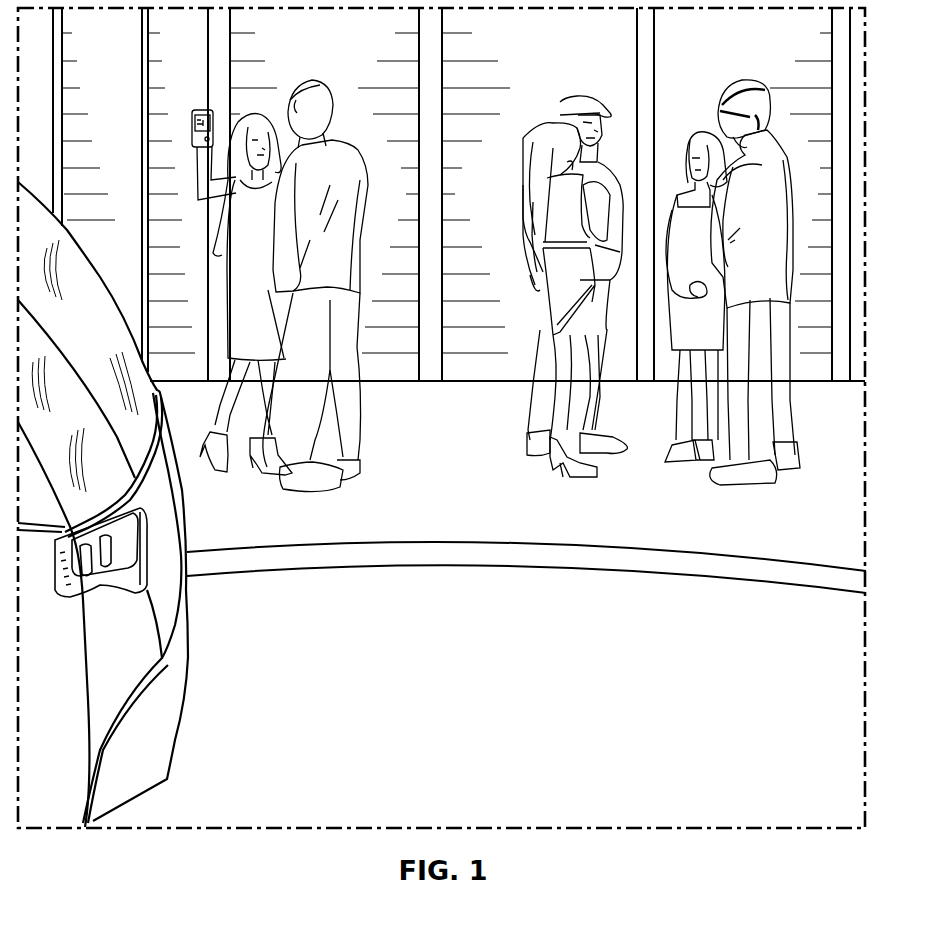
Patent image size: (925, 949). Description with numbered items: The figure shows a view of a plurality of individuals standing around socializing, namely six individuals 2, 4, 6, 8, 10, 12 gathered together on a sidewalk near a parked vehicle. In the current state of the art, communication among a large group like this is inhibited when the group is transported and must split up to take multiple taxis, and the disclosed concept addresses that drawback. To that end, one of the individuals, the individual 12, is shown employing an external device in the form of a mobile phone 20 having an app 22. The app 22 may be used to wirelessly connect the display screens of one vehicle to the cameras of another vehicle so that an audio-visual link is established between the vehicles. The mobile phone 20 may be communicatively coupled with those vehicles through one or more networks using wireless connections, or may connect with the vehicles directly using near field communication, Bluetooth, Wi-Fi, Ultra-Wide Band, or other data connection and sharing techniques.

The individual 2 is at (743, 80).
The individual 4 is at (704, 133).
The individual 6 is at (577, 97).
The individual 8 is at (547, 132).
The individual 10 is at (320, 79).
The individual 12 is at (256, 114).
The mobile phone 20 is at (200, 112).
The app 22 is at (193, 123).